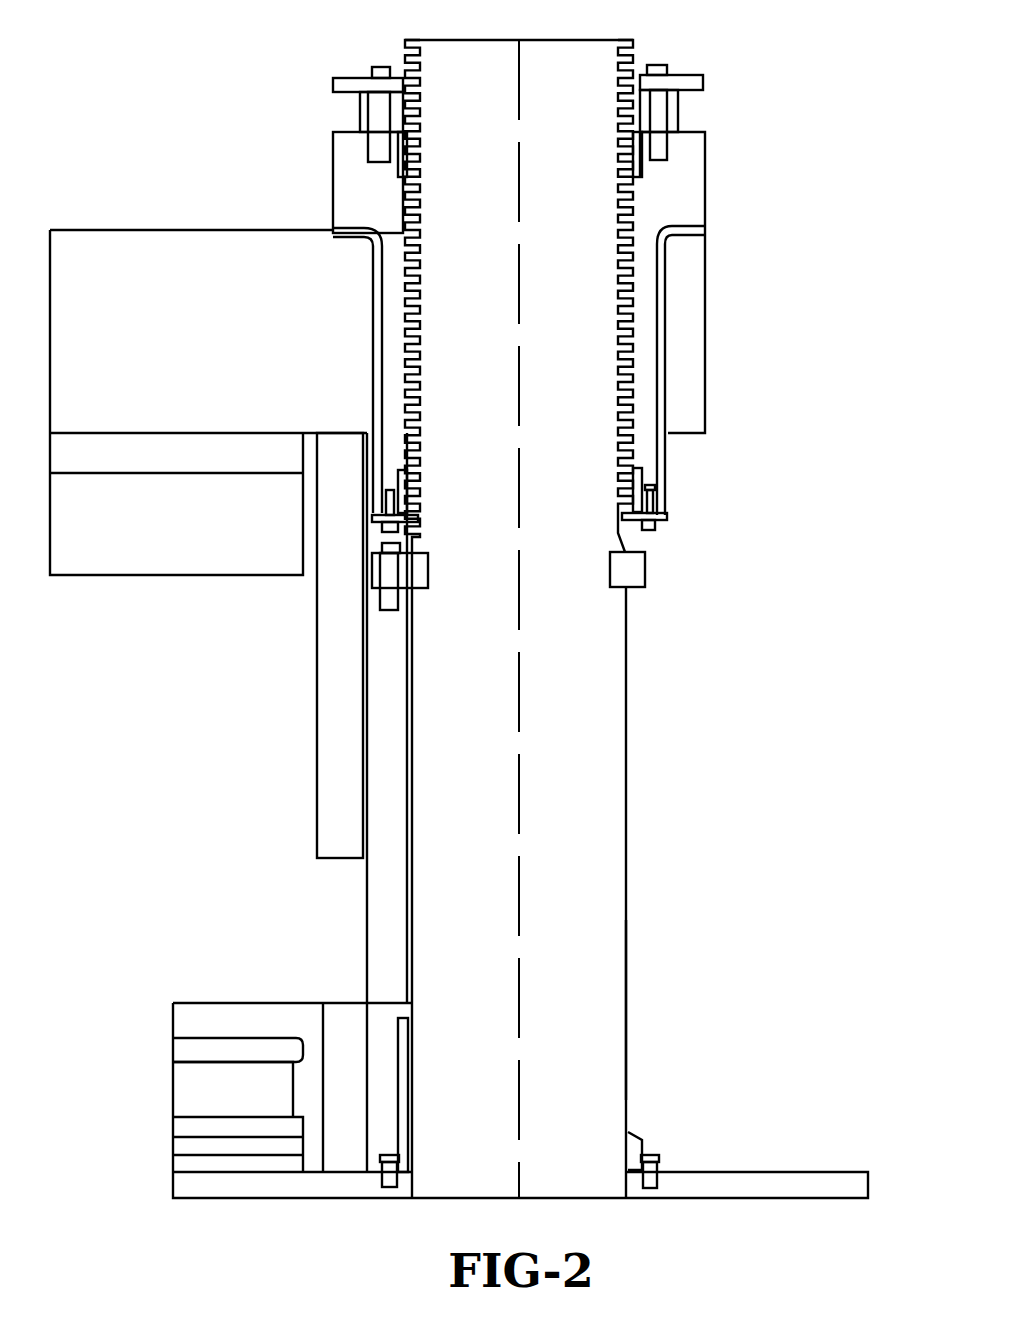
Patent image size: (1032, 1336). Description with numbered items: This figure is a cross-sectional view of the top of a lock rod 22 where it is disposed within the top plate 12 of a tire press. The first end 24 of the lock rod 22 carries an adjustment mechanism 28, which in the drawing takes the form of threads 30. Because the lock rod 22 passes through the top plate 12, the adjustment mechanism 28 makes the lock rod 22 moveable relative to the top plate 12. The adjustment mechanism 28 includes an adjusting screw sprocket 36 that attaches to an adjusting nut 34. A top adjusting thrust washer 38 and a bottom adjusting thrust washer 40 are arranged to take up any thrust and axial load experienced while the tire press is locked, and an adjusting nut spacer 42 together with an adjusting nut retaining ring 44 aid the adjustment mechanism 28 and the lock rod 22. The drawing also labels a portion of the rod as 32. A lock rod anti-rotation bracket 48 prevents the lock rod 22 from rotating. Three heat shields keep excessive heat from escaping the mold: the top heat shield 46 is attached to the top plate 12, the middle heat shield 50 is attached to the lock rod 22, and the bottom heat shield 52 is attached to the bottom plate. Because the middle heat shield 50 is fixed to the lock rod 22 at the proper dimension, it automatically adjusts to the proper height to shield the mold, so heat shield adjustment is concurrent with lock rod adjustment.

The top plate 12 is at (166, 312).
The lock rod 22 is at (628, 850).
The first end 24 is at (452, 62).
The adjustment mechanism 28 is at (333, 160).
The threads 30 is at (410, 240).
The cylinder wall 32 is at (628, 974).
The adjusting nut 34 is at (705, 168).
The adjusting screw sprocket 36 is at (684, 110).
The top adjusting thrust washer 38 is at (693, 229).
The bottom adjusting thrust washer 40 is at (667, 440).
The adjusting nut spacer 42 is at (667, 490).
The adjusting nut retaining ring 44 is at (667, 513).
The top heat shield 46 is at (317, 658).
The lock rod anti-rotation bracket 48 is at (645, 588).
The middle heat shield 50 is at (367, 918).
The bottom heat shield 52 is at (322, 1038).